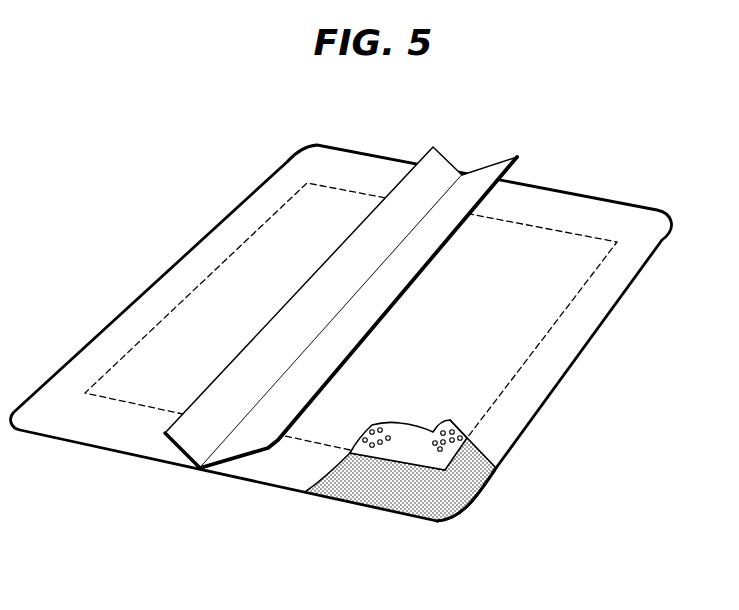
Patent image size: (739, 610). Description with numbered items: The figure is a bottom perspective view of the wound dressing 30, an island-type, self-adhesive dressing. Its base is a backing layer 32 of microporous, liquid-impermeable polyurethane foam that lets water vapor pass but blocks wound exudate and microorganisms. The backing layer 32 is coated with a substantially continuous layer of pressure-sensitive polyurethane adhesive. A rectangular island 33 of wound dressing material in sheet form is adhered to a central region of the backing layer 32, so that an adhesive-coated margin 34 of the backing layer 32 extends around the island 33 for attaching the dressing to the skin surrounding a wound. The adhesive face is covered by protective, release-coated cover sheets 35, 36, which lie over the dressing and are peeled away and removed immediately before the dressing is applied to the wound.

The wound dressing 30 is at (610, 188).
The backing layer 32 is at (482, 490).
The rectangular island 33 is at (428, 458).
The adhesive-coated margin 34 is at (368, 493).
The cover sheet 35 is at (438, 172).
The cover sheet 36 is at (485, 175).